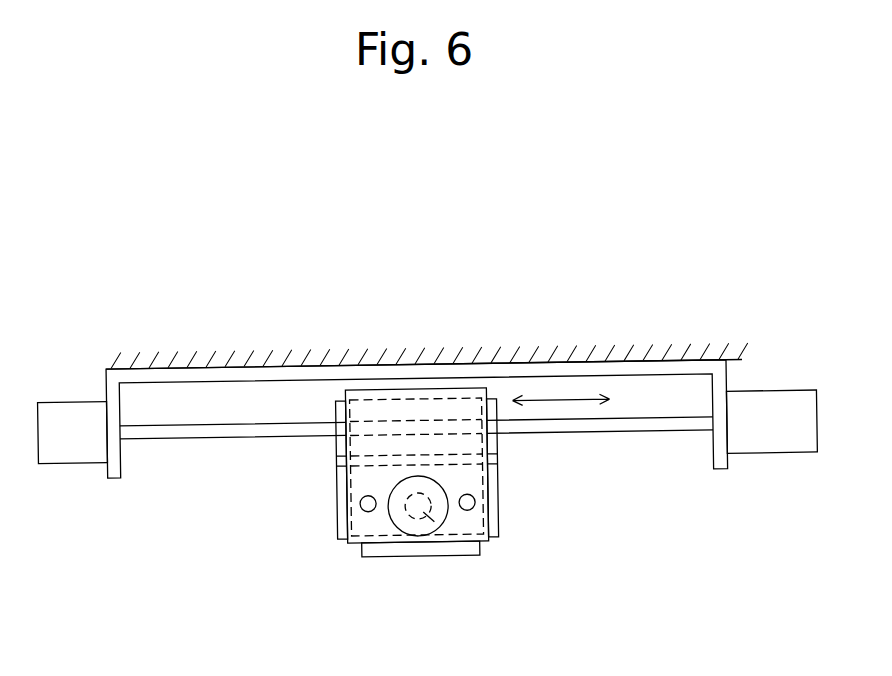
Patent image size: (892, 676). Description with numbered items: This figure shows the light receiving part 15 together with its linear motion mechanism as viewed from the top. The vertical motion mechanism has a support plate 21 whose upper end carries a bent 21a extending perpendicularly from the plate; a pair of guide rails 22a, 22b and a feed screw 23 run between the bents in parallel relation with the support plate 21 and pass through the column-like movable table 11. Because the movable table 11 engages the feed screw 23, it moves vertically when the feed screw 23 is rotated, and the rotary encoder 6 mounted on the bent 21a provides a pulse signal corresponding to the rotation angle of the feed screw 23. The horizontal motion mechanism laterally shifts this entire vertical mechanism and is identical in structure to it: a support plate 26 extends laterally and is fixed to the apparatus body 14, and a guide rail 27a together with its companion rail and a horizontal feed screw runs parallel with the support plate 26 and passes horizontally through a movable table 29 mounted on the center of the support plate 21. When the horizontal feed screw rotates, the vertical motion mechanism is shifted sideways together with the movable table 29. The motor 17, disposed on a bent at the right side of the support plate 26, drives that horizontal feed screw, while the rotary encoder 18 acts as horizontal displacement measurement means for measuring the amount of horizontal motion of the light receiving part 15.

The rotary encoder 6 is at (389, 519).
The movable table 11 is at (337, 524).
The apparatus body 14 is at (228, 366).
The light receiving part 15 is at (415, 558).
The motor 17 is at (63, 460).
The rotary encoder 18 is at (777, 457).
The support plate 21 is at (423, 389).
The bent 21a is at (497, 539).
The guide rail 22a is at (364, 502).
The guide rail 22b is at (470, 504).
The feed screw 23 is at (455, 558).
The support plate 26 is at (607, 373).
The guide rail 27a is at (683, 432).
The movable table 29 is at (497, 449).